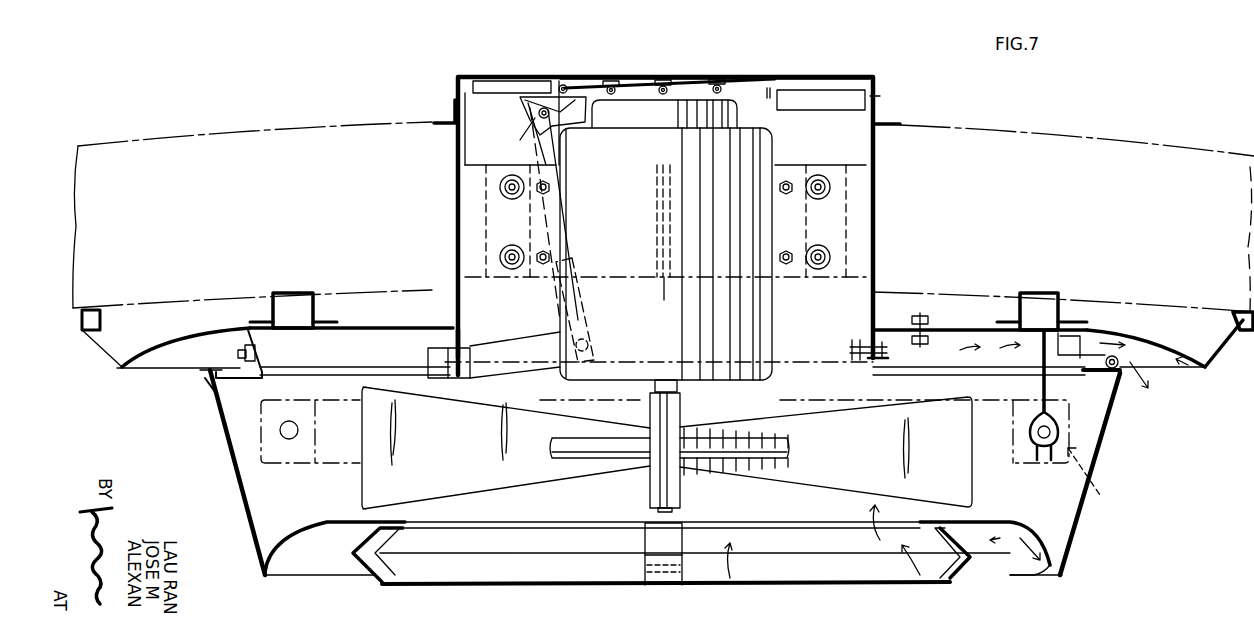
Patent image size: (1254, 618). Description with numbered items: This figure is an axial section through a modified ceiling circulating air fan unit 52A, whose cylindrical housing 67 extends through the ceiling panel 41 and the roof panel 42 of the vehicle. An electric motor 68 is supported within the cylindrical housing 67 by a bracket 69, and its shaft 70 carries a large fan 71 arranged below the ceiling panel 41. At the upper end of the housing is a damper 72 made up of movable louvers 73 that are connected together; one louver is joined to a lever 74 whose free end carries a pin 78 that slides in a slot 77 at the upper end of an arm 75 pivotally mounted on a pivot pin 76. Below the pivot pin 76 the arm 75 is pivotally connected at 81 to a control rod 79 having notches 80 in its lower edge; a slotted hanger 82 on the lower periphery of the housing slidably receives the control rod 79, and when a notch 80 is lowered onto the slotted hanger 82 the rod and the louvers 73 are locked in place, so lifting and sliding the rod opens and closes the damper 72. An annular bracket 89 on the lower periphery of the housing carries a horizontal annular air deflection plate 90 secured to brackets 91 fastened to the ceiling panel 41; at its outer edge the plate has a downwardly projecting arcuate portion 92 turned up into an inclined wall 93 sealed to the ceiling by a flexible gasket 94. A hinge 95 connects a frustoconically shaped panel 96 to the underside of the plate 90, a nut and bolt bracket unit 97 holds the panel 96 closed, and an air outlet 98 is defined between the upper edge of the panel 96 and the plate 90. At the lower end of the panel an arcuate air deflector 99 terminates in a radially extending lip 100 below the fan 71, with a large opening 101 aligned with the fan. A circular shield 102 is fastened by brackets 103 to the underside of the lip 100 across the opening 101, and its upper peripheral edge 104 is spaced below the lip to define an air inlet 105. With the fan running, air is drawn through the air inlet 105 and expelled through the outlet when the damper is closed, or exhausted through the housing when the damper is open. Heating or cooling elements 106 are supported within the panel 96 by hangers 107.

The ceiling panel 41 is at (1193, 312).
The roof panel 42 is at (1186, 144).
The circulating air fan unit 52A is at (890, 96).
The cylindrical housing 67 is at (873, 201).
The electric motor 68 is at (760, 320).
The bracket 69 is at (804, 172).
The shaft 70 is at (678, 390).
The fan 71 is at (750, 418).
The damper 72 is at (710, 81).
The louvers 73 is at (597, 84).
The lever 74 is at (566, 84).
The arm 75 is at (540, 146).
The pivot pin 76 is at (575, 258).
The slot 77 is at (548, 121).
The pin 78 is at (545, 103).
The control rod 79 is at (500, 348).
The notches 80 is at (504, 366).
The pivotal connection 81 is at (592, 345).
The slotted hanger 82 is at (452, 323).
The annular bracket 89 is at (878, 362).
The air deflection plate 90 is at (968, 328).
The brackets 91 is at (1060, 303).
The arcuate portion 92 is at (1142, 329).
The inclined wall 93 is at (1220, 350).
The flexible gasket 94 is at (1232, 322).
The hinge 95 is at (1096, 356).
The frustoconically shaped panel 96 is at (1098, 437).
The nut and bolt bracket unit 97 is at (262, 365).
The air outlet 98 is at (1165, 383).
The arcuate air deflector 99 is at (1025, 537).
The lip 100 is at (965, 522).
The opening 101 is at (815, 531).
The circular shield 102 is at (803, 585).
The brackets 103 is at (390, 529).
The upper peripheral edge 104 is at (540, 550).
The air inlet 105 is at (718, 575).
The heating or cooling elements 106 is at (691, 463).
The hangers 107 is at (1037, 387).